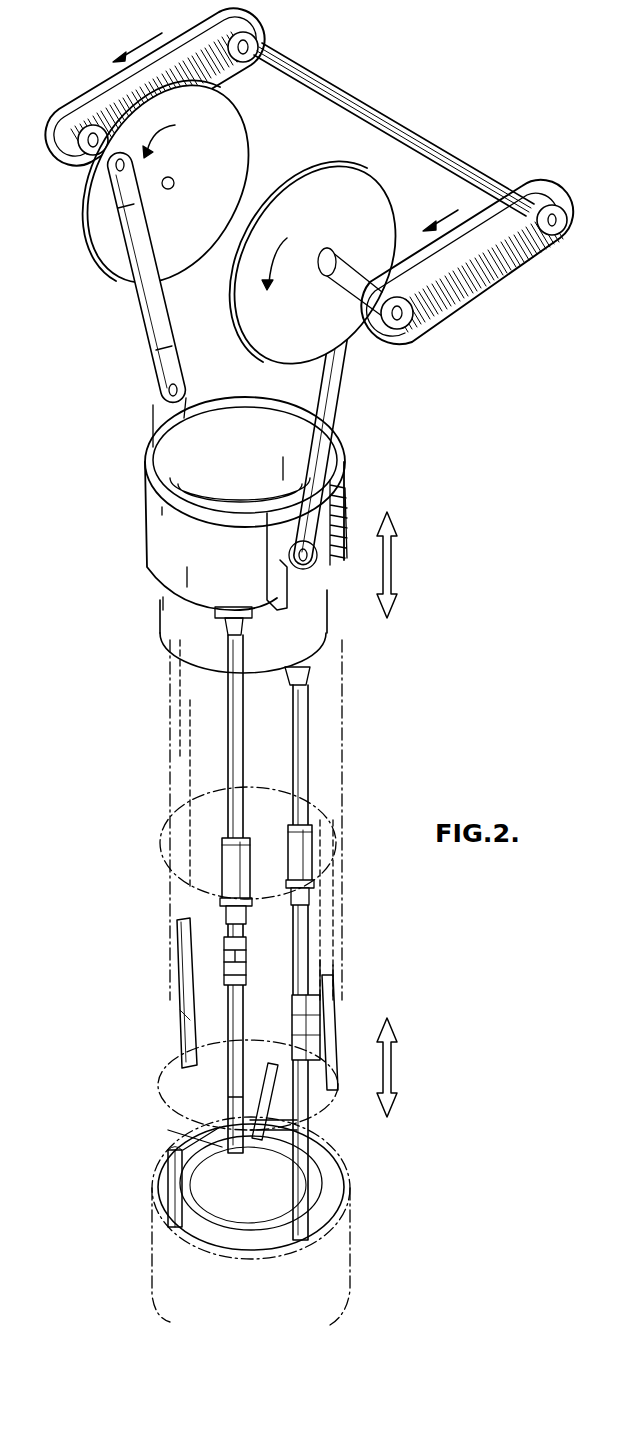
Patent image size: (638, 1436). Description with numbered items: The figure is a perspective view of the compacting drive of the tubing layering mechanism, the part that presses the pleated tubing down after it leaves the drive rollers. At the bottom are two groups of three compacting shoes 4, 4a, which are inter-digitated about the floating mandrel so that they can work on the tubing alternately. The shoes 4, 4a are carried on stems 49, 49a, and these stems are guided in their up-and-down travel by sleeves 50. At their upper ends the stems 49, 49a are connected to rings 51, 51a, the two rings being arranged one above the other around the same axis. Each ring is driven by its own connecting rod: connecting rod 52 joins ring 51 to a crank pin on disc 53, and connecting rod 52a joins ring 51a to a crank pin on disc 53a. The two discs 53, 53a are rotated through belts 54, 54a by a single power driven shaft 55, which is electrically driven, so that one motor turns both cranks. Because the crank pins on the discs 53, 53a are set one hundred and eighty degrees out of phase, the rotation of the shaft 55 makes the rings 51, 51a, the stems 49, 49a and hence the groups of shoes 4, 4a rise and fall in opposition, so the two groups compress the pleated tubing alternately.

The belt 54 is at (88, 103).
The belt 54a is at (453, 240).
The power driven shaft 55 is at (360, 103).
The disc 53 is at (237, 160).
The disc 53a is at (373, 190).
The connecting rod 52 is at (158, 322).
The connecting rod 52a is at (338, 395).
The ring 51 is at (152, 549).
The ring 51a is at (300, 625).
The stem 49 is at (230, 755).
The stem 49a is at (303, 758).
The sleeve 50 is at (230, 863).
The compacting shoe 4 is at (185, 1052).
The compacting shoe 4a is at (292, 1207).